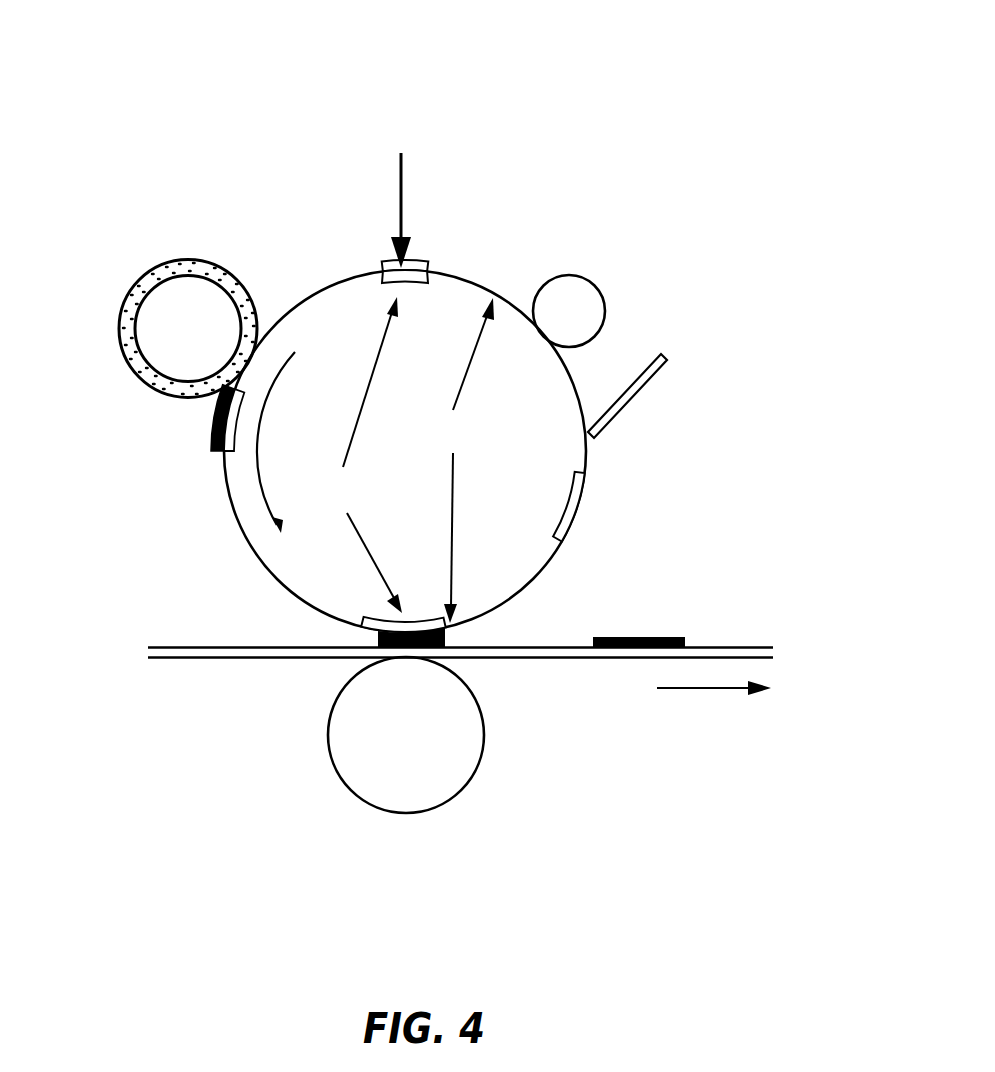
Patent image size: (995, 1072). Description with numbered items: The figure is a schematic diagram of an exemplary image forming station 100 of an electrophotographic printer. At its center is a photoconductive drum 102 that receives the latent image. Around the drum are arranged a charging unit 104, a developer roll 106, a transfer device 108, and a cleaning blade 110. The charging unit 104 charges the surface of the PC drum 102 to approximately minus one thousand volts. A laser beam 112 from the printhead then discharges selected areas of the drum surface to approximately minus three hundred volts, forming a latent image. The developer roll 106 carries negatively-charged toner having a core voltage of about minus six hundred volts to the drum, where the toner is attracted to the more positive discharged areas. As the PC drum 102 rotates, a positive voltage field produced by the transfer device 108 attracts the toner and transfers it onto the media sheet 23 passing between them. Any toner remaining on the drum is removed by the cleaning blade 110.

The image forming station 100 is at (543, 92).
The laser beam 112 is at (403, 182).
The developer roll 106 is at (138, 282).
The charging unit 104 is at (585, 278).
The cleaning blade 110 is at (657, 380).
The photoconductive drum 102 is at (578, 520).
The media sheet 23 is at (235, 659).
The transfer device 108 is at (453, 793).